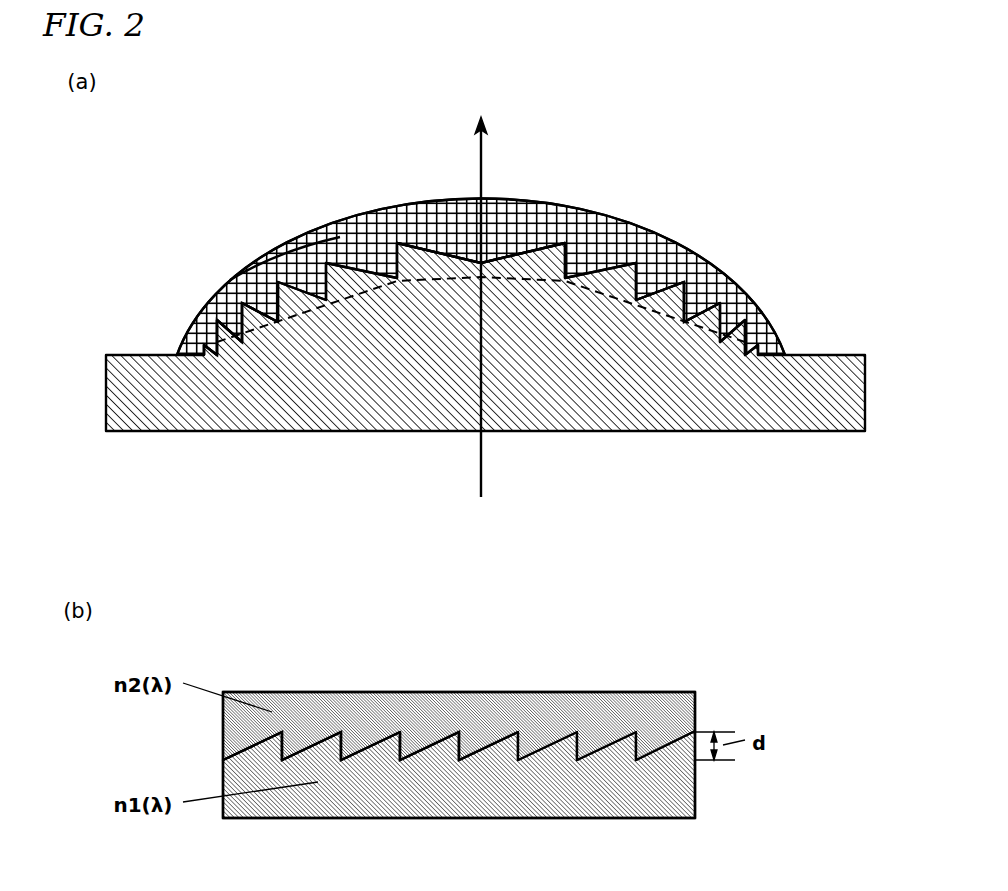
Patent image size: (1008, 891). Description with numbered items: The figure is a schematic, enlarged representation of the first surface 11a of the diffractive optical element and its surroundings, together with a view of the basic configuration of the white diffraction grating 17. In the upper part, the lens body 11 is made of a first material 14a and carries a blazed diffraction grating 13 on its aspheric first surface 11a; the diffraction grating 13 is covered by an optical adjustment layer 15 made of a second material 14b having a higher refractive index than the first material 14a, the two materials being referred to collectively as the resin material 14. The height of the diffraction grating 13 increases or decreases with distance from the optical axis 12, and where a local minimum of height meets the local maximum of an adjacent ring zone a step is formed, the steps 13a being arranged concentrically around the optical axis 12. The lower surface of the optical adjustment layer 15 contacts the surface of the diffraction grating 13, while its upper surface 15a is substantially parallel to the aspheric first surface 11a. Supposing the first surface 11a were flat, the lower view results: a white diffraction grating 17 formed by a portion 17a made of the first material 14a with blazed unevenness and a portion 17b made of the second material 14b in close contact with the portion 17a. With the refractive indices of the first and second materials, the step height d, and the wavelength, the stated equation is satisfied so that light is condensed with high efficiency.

The lens body 11 is at (795, 392).
The first surface 11a is at (658, 292).
The optical axis 12 is at (482, 223).
The diffraction grating 13 is at (634, 263).
The steps 13a is at (455, 257).
The resin material 14 is at (307, 478).
The first material 14a is at (327, 510).
The second material 14b is at (293, 264).
The optical adjustment layer 15 is at (588, 242).
The upper surface of the optical adjustment layer 15a is at (726, 273).
The white diffraction grating 17 is at (535, 748).
The portion made of the first material 17a is at (665, 798).
The portion made of the second material 17b is at (653, 722).